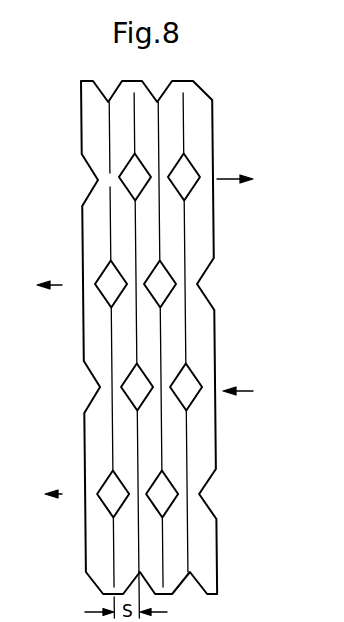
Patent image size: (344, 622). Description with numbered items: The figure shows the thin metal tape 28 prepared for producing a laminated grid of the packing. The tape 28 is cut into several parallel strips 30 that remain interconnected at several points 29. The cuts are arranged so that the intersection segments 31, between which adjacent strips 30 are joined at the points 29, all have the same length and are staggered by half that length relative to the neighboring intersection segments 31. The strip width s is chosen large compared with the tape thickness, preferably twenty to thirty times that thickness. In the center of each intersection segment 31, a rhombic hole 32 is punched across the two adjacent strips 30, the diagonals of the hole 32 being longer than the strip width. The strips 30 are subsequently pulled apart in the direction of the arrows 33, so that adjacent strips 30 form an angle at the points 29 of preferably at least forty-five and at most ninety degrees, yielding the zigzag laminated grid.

The metal tape 28 is at (65, 152).
The points 29 is at (132, 277).
The strips 30 is at (117, 355).
The intersection segments 31 is at (110, 337).
The rhombic hole 32 is at (136, 385).
The arrows 33 is at (226, 391).